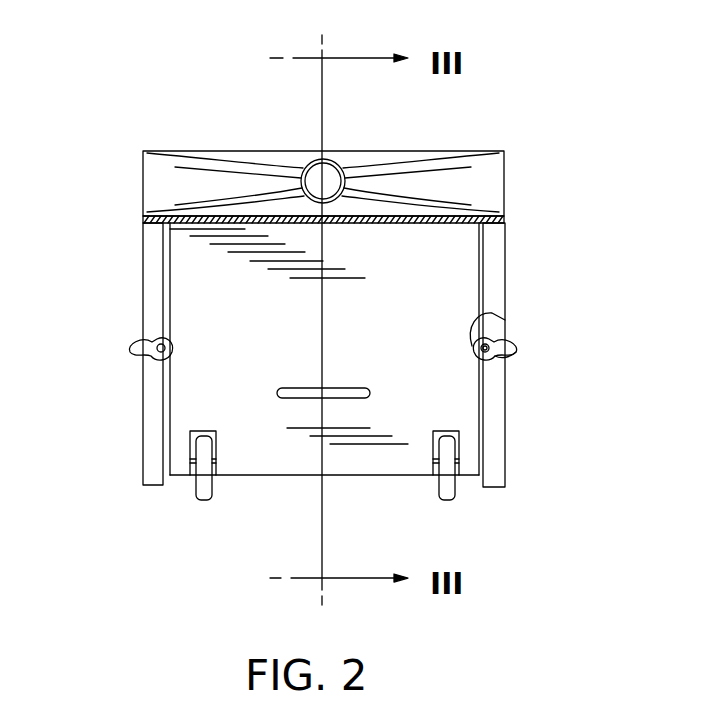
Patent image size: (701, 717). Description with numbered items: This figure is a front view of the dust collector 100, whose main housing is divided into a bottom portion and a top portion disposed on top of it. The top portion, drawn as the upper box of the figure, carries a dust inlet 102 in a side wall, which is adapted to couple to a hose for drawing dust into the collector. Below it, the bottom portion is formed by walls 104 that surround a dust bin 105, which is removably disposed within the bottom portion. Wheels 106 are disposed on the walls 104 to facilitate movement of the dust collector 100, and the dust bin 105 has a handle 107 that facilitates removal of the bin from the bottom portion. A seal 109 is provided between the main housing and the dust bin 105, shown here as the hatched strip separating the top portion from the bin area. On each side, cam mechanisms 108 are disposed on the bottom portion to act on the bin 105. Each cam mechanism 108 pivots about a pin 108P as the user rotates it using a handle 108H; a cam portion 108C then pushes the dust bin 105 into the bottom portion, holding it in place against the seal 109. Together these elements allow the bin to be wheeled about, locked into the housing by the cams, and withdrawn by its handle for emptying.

The dust collector 100 is at (532, 100).
The dust inlet 102 is at (264, 166).
The walls 104 is at (148, 413).
The dust bin 105 is at (430, 292).
The wheels 106 is at (186, 499).
The handle 107 is at (293, 399).
The cam mechanisms 108 is at (146, 362).
The cam portion 108C is at (496, 313).
The handle 108H is at (513, 357).
The pin 108P is at (488, 358).
The seal 109 is at (450, 224).